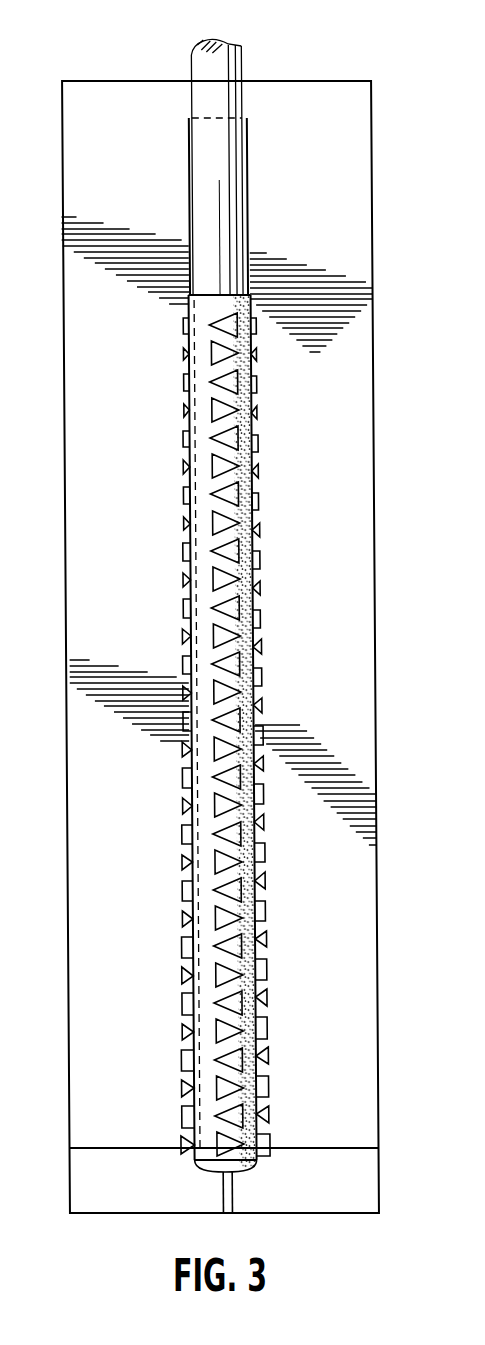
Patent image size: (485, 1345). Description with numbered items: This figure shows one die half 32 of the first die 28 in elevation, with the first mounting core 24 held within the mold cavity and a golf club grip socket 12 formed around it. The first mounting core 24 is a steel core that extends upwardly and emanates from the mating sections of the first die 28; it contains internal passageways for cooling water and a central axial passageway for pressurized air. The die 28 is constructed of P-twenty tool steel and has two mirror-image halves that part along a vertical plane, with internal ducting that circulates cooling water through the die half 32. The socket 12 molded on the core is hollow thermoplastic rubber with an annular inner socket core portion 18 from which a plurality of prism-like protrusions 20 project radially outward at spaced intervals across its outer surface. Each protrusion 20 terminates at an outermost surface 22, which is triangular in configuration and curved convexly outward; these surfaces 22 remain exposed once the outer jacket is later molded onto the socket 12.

The inner tubular socket 12 is at (262, 604).
The inner socket core portion 18 is at (197, 724).
The protrusions 20 is at (222, 737).
The outermost surfaces 22 is at (226, 734).
The first mounting core 24 is at (239, 68).
The first die 28 is at (346, 55).
The die half 32 is at (75, 150).